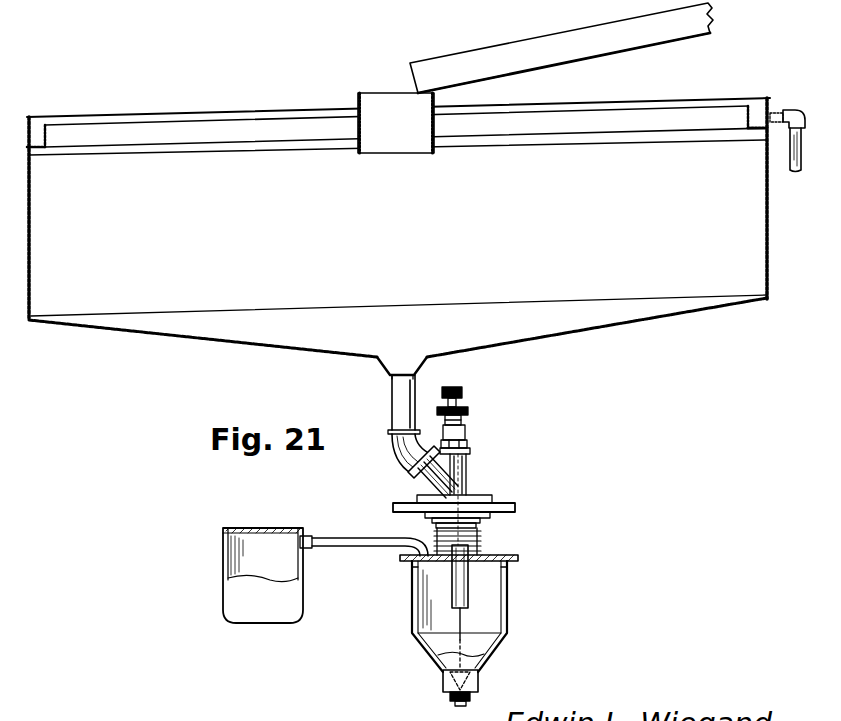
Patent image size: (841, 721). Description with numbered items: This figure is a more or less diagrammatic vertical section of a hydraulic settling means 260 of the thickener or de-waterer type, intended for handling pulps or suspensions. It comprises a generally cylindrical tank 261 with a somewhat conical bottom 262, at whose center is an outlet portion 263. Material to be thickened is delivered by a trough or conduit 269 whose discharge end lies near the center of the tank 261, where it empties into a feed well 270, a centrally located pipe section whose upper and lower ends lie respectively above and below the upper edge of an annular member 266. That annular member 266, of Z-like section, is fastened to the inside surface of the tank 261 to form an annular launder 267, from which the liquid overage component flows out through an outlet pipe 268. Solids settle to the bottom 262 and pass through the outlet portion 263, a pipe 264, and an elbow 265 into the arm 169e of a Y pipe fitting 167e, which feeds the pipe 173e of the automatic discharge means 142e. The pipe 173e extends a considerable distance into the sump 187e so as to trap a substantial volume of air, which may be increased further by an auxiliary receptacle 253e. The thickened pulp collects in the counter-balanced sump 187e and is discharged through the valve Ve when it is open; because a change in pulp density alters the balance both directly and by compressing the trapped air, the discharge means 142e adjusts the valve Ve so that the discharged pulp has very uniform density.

The hydraulic settling means 260 is at (144, 110).
The tank 261 is at (33, 236).
The bottom 262 is at (106, 331).
The outlet portion 263 is at (382, 360).
The pipe 264 is at (395, 403).
The elbow 265 is at (402, 447).
The annular member 266 is at (748, 125).
The launder 267 is at (757, 104).
The outlet pipe 268 is at (777, 115).
The conduit 269 is at (618, 47).
The feed well 270 is at (357, 100).
The Y pipe fitting 167e is at (476, 467).
The arm 169e is at (433, 477).
The automatic discharge means 142e is at (525, 546).
The pipe 173e is at (470, 578).
The sump 187e is at (512, 600).
The auxiliary receptacle 253e is at (218, 566).
The valve Ve is at (480, 672).